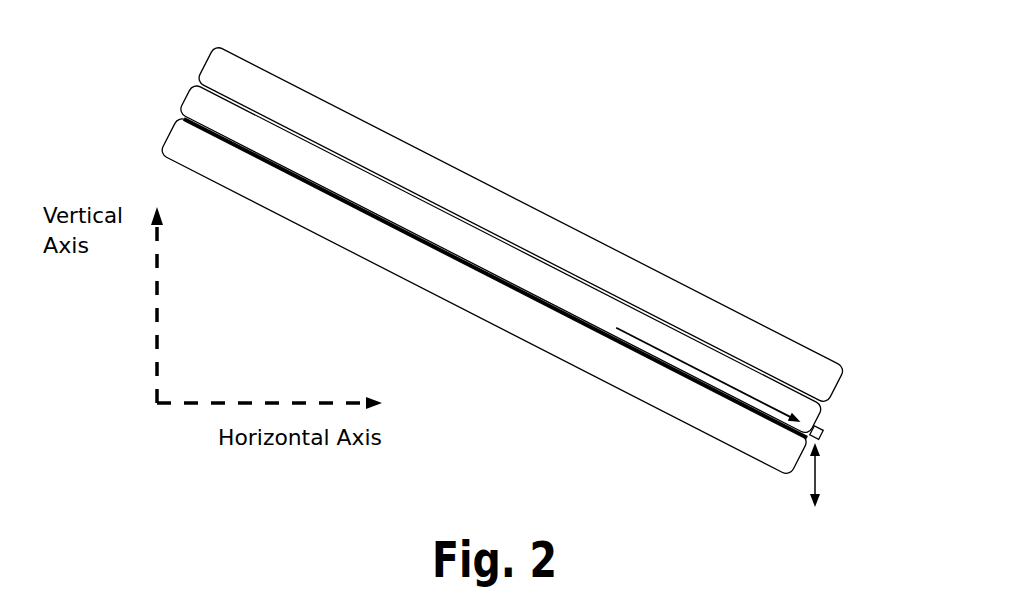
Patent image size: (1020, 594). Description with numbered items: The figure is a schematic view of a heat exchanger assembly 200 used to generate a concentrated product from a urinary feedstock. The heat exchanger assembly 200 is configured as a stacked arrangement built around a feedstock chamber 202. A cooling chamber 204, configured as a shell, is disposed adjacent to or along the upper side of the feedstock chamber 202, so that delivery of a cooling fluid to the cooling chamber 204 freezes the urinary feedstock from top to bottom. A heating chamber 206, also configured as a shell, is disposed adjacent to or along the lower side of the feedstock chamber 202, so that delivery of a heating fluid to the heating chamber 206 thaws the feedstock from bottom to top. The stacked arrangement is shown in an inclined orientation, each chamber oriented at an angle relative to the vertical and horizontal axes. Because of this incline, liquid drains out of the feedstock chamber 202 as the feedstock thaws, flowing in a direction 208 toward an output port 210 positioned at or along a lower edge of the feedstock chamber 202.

The heat exchanger assembly 200 is at (601, 100).
The feedstock chamber 202 is at (186, 97).
The cooling chamber 204 is at (718, 302).
The heating chamber 206 is at (590, 374).
The direction 208 is at (726, 384).
The output port 210 is at (823, 431).